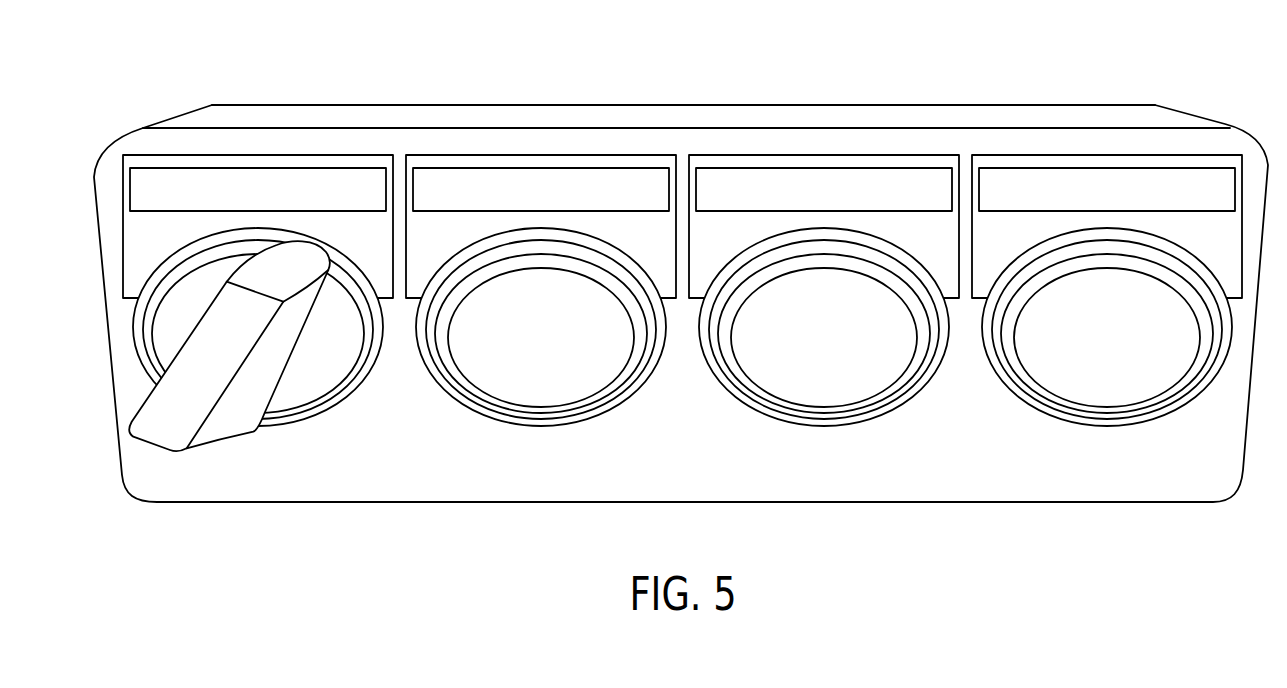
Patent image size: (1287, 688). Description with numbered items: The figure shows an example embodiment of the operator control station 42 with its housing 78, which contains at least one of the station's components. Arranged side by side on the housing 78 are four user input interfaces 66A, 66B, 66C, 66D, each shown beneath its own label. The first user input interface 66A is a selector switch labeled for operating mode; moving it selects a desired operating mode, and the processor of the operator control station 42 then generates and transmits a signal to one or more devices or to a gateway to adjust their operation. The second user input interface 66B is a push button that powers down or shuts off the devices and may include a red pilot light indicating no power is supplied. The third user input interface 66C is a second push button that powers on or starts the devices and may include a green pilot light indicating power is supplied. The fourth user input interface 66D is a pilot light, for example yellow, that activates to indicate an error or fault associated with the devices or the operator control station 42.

The operator control station 42 is at (97, 103).
The housing 78 is at (337, 122).
The first user input interface 66A is at (307, 383).
The second user input interface 66B is at (587, 385).
The third user input interface 66C is at (870, 385).
The fourth user input interface 66D is at (1152, 383).